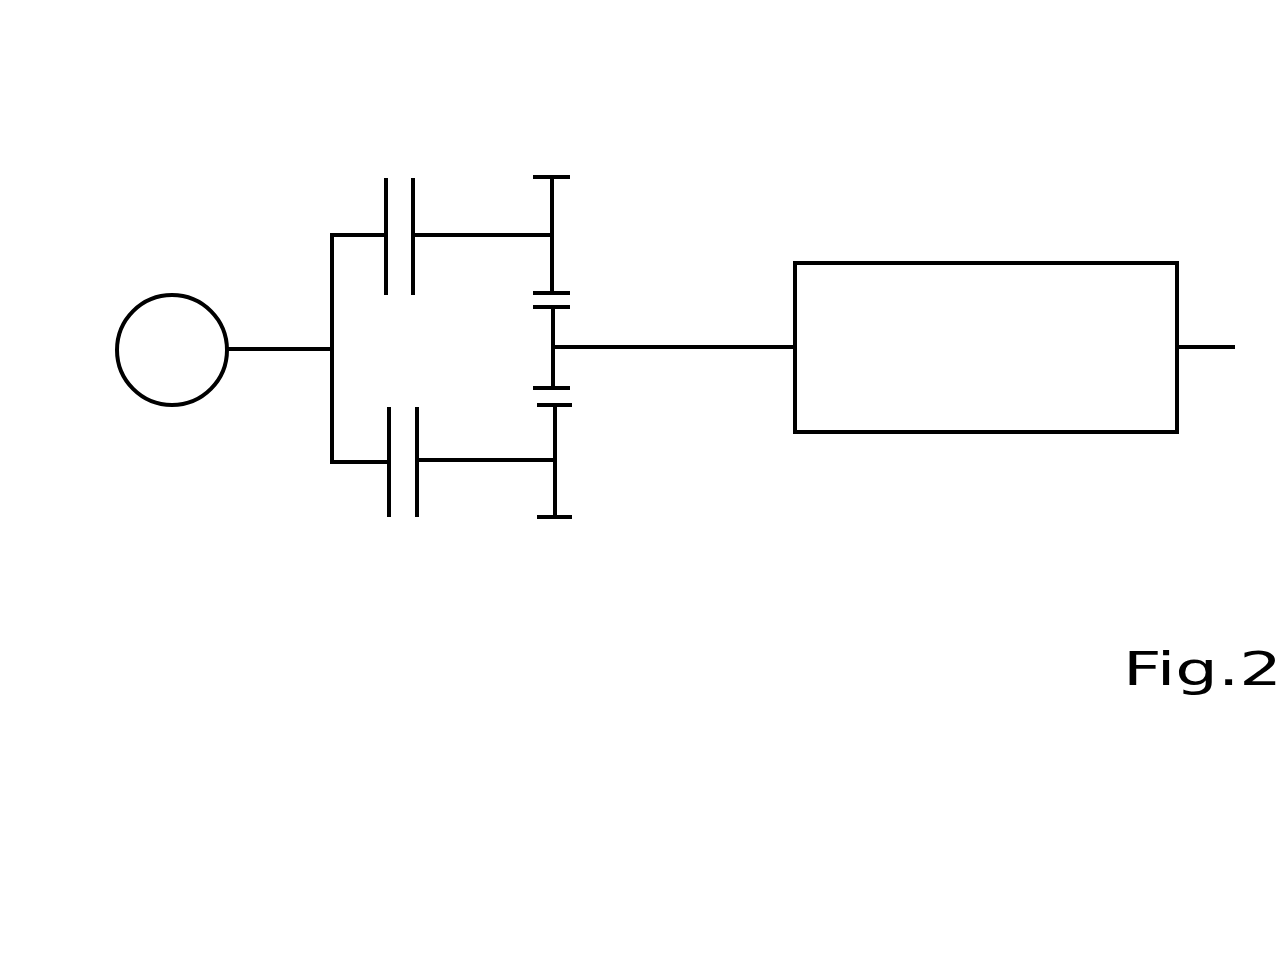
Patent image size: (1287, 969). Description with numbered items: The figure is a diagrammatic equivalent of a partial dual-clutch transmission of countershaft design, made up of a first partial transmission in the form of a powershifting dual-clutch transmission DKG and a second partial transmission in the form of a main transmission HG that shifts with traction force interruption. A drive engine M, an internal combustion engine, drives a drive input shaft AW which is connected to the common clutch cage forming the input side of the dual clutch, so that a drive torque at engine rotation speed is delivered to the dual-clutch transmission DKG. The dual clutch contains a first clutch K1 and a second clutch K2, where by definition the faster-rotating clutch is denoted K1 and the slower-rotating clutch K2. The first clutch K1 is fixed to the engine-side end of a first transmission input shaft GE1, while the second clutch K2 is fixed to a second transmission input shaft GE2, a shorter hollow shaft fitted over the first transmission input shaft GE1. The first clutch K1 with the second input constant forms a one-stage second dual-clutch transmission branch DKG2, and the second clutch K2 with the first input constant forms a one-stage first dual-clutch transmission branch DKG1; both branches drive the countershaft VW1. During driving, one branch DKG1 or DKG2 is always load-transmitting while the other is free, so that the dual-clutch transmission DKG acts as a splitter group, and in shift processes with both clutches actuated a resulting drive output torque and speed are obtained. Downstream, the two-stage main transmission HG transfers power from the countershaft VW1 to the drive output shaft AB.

The drive engine M is at (180, 407).
The drive input shaft AW is at (240, 347).
The dual-clutch transmission DKG is at (366, 213).
The first dual-clutch transmission branch DKG1 is at (455, 641).
The second dual-clutch transmission branch DKG2 is at (453, 47).
The first clutch K1 is at (387, 178).
The second clutch K2 is at (389, 517).
The first transmission input shaft GE1 is at (497, 235).
The second transmission input shaft GE2 is at (508, 460).
The countershaft VW1 is at (785, 347).
The main transmission HG is at (918, 238).
The drive output shaft AB is at (1223, 345).